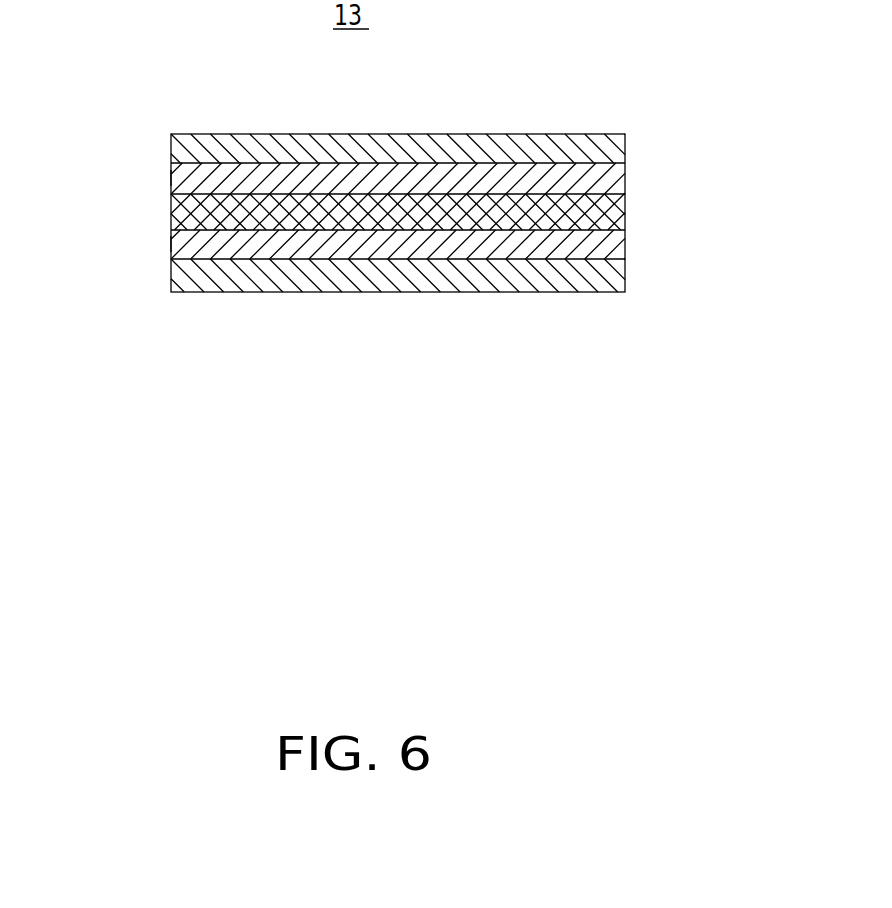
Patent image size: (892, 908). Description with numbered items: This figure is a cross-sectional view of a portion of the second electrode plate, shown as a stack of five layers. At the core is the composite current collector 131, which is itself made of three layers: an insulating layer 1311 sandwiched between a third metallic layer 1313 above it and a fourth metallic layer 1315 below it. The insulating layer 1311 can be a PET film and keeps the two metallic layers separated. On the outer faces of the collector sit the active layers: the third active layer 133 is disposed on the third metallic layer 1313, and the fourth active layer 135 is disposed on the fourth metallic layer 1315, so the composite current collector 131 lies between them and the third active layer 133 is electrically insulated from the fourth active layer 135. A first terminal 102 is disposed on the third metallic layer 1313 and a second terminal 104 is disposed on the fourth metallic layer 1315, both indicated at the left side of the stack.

The composite current collector 131 is at (729, 172).
The third active layer 133 is at (607, 148).
The third metallic layer 1313 is at (605, 180).
The insulating layer 1311 is at (607, 212).
The fourth metallic layer 1315 is at (605, 248).
The fourth active layer 135 is at (607, 275).
The first terminal 102 is at (171, 178).
The second terminal 104 is at (171, 244).